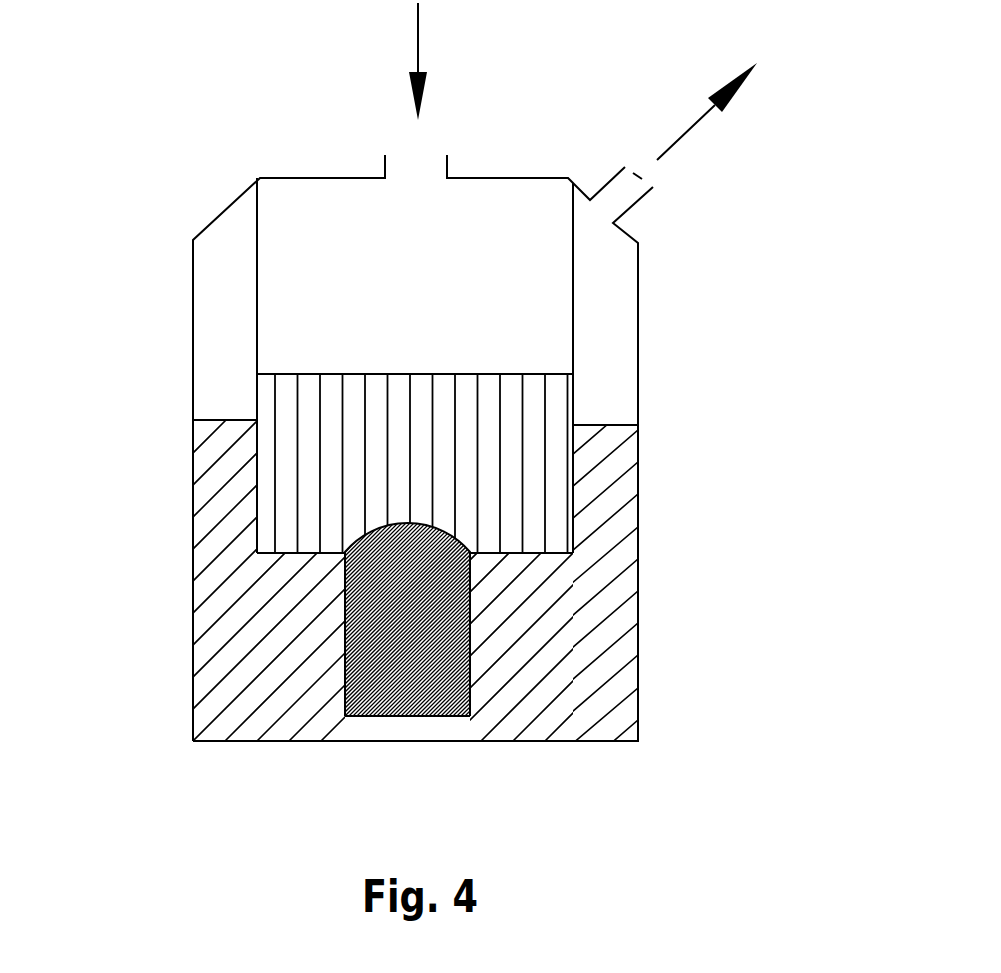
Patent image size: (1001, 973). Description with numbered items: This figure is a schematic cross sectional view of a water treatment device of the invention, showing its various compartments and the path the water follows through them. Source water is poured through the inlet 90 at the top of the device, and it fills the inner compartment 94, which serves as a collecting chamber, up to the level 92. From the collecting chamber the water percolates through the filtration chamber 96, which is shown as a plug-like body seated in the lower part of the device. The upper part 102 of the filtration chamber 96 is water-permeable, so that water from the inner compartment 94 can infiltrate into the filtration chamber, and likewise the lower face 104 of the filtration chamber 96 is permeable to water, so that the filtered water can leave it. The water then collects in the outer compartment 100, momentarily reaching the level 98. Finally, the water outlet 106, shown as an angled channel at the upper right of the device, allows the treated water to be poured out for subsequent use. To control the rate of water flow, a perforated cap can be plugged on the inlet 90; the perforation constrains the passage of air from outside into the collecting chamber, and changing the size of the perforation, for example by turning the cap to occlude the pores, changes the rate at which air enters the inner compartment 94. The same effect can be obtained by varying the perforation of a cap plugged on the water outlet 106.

The inlet 90 is at (385, 162).
The level 92 is at (563, 333).
The inner compartment 94 is at (265, 326).
The filtration chamber 96 is at (345, 682).
The level 98 is at (603, 422).
The outer compartment 100 is at (605, 685).
The upper part 102 is at (365, 525).
The lower face 104 is at (367, 718).
The water outlet 106 is at (630, 220).